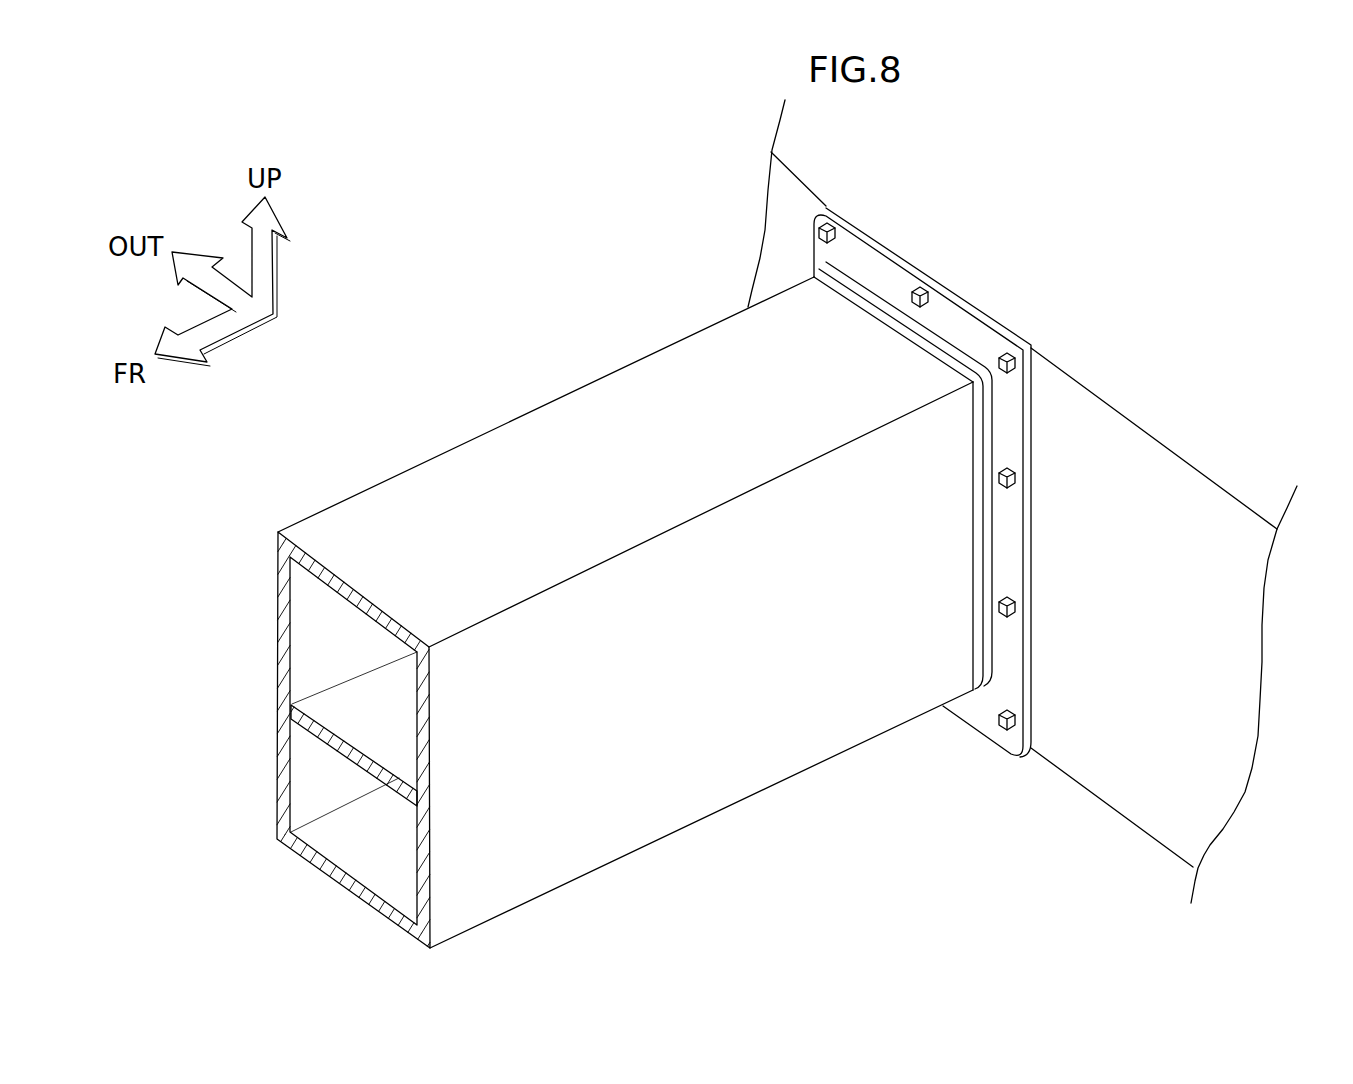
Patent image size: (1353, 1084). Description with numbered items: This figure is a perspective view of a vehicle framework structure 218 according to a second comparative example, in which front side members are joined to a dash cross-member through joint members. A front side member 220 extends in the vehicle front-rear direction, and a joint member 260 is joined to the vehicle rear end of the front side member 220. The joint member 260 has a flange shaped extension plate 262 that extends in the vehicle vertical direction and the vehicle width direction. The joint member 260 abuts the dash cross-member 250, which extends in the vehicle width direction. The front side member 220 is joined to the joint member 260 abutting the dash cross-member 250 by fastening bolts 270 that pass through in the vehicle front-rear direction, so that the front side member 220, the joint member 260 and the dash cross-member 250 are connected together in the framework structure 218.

The vehicle framework structure 218 is at (592, 282).
The front side member 220 is at (665, 843).
The dash cross-member 250 is at (1178, 450).
The joint member 260 is at (1036, 397).
The extension plate 262 is at (975, 332).
The fastening bolt 270 is at (997, 368).